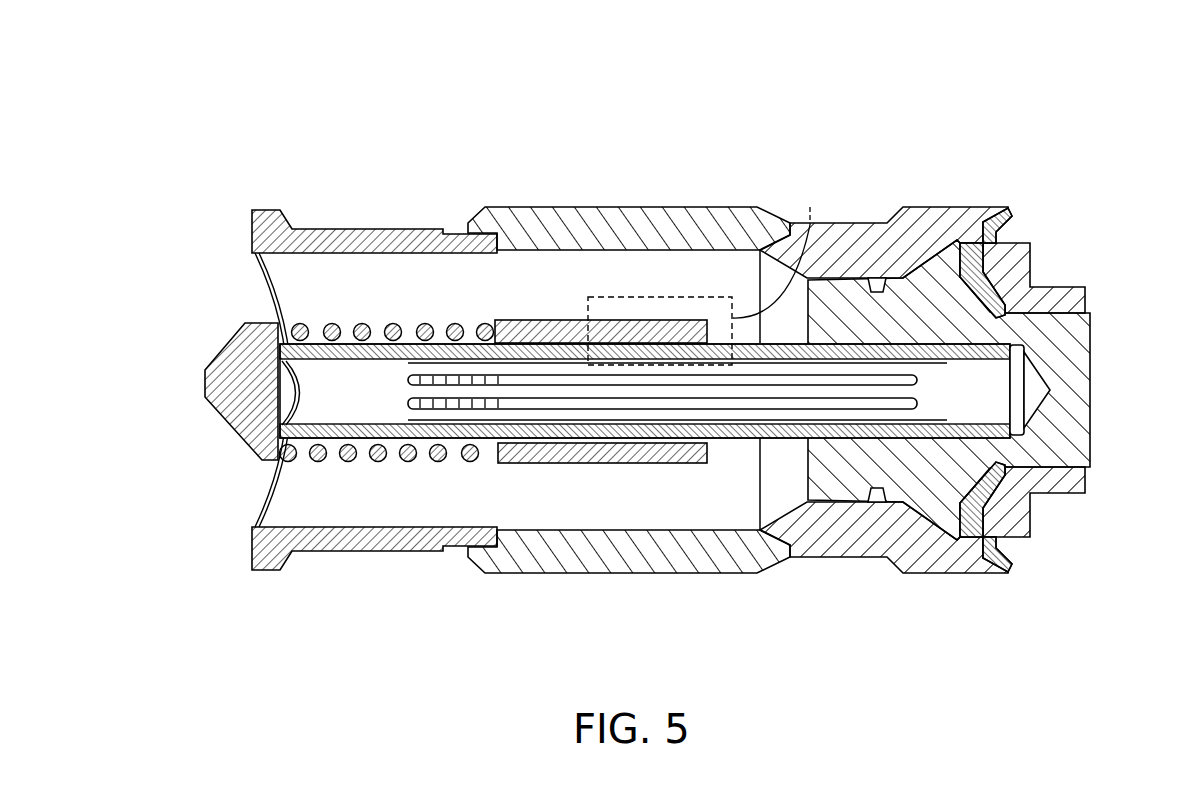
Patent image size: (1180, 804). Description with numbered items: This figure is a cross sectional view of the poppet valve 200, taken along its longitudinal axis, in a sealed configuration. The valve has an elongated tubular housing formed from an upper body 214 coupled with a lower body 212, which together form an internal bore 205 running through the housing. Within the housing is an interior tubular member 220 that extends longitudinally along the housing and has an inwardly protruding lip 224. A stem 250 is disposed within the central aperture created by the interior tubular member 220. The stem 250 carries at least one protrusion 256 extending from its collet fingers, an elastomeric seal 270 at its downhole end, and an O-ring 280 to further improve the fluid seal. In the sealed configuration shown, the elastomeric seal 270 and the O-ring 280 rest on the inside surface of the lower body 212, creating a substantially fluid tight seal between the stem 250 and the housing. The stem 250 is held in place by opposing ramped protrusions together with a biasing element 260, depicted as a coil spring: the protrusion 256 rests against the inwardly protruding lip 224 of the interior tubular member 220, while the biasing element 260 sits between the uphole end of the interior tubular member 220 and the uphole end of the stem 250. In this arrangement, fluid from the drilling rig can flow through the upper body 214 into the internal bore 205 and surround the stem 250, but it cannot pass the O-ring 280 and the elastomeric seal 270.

The poppet valve 200 is at (1055, 120).
The internal bore 205 is at (303, 303).
The lower body 212 is at (1012, 183).
The upper body 214 is at (325, 238).
The interior tubular member 220 is at (537, 323).
The inwardly protruding lip 224 is at (687, 463).
The stem 250 is at (1090, 243).
The protrusion 256 is at (625, 463).
The biasing element 260 is at (343, 460).
The elastomeric seal 270 is at (977, 557).
The O-ring 280 is at (872, 502).